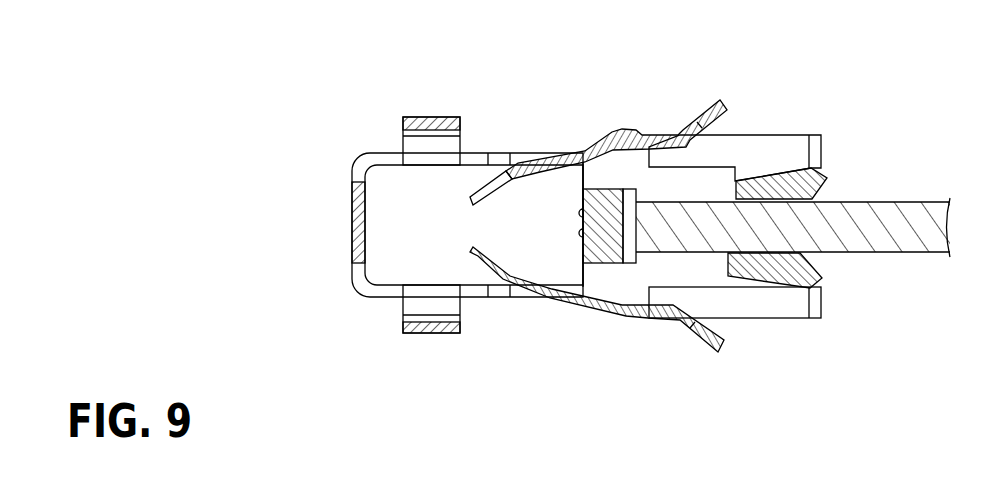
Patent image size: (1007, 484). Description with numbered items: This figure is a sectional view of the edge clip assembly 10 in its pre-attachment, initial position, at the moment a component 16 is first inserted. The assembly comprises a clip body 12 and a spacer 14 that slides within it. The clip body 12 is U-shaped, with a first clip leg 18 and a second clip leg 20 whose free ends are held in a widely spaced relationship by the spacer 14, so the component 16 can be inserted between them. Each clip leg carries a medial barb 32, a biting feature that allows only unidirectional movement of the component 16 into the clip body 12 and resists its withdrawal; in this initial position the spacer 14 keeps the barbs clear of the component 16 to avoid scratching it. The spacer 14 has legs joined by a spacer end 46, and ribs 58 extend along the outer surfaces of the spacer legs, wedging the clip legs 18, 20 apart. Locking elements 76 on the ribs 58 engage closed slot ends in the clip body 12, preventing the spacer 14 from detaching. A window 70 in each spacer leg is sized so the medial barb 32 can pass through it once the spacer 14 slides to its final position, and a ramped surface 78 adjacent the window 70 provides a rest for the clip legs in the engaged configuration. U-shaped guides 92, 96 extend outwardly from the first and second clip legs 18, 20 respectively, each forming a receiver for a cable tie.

The edge clip assembly 10 is at (362, 309).
The clip body 12 is at (340, 158).
The spacer 14 is at (843, 160).
The component 16 is at (915, 195).
The first clip leg 18 is at (703, 112).
The second clip leg 20 is at (712, 347).
The medial barb 32 is at (482, 255).
The spacer end 46 is at (584, 257).
The rib 58 is at (777, 135).
The window 70 is at (787, 170).
The locking element 76 is at (650, 132).
The ramped surface 78 is at (755, 288).
The guide 92 is at (427, 117).
The guide 96 is at (422, 333).